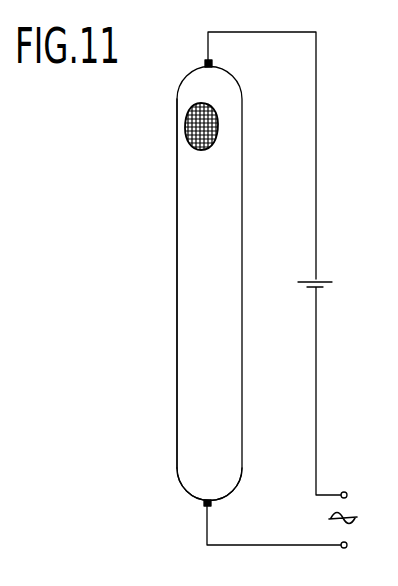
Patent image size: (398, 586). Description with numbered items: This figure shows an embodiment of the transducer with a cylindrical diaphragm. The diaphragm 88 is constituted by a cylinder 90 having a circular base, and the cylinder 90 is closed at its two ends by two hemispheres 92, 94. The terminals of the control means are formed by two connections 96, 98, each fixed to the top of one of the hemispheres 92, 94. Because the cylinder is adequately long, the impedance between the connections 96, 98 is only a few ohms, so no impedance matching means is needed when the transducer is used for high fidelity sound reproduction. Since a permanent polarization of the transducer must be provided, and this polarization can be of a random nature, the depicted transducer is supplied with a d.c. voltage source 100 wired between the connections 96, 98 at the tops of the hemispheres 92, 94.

The diaphragm 88 is at (158, 297).
The cylinder 90 is at (177, 224).
The hemisphere 92 is at (188, 75).
The hemisphere 94 is at (187, 495).
The connection 96 is at (213, 63).
The connection 98 is at (200, 504).
The d.c. voltage source 100 is at (312, 281).